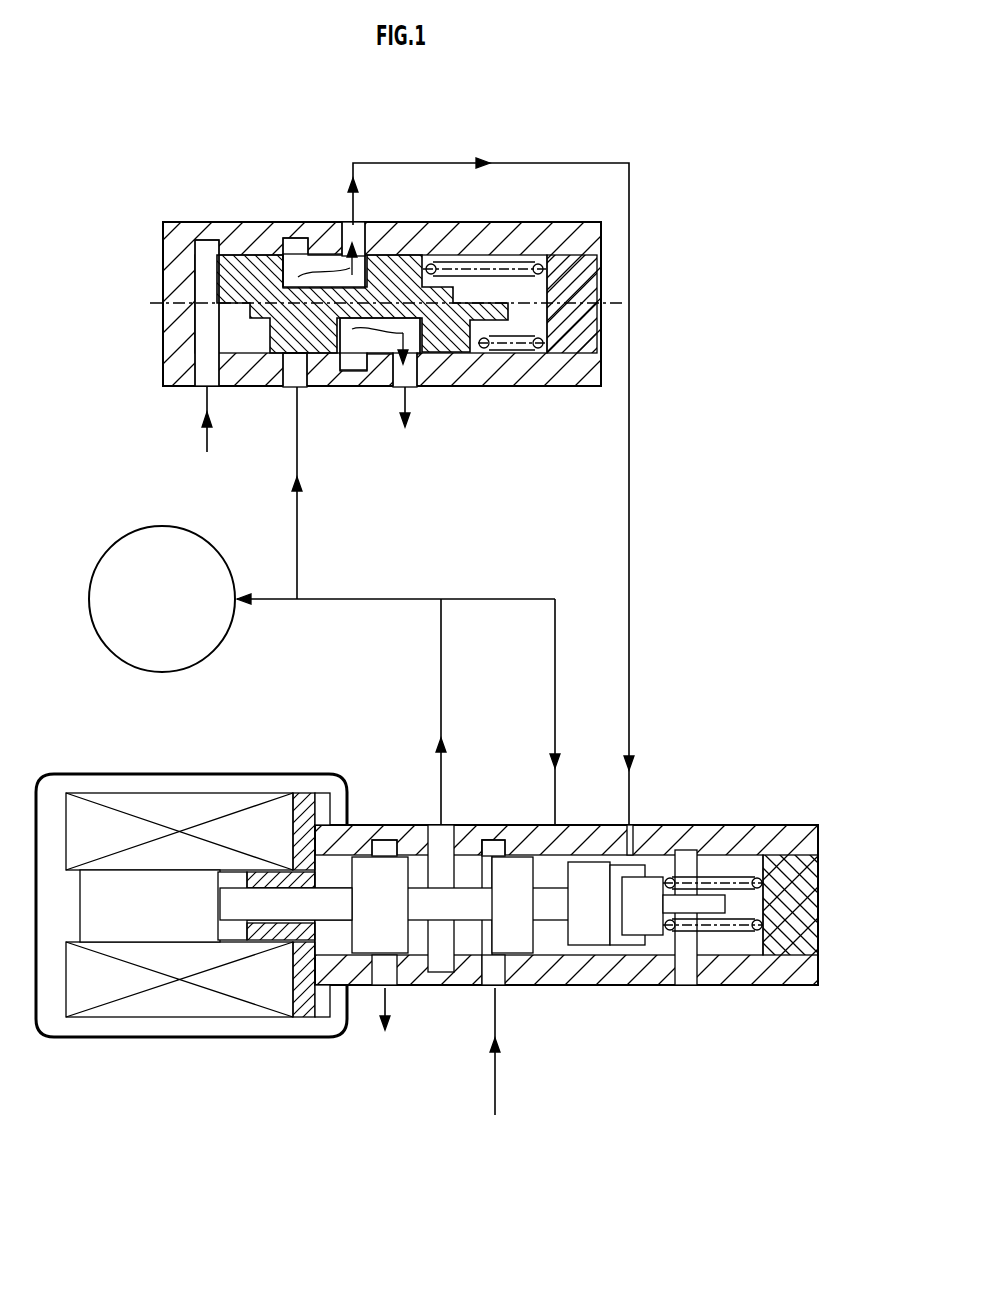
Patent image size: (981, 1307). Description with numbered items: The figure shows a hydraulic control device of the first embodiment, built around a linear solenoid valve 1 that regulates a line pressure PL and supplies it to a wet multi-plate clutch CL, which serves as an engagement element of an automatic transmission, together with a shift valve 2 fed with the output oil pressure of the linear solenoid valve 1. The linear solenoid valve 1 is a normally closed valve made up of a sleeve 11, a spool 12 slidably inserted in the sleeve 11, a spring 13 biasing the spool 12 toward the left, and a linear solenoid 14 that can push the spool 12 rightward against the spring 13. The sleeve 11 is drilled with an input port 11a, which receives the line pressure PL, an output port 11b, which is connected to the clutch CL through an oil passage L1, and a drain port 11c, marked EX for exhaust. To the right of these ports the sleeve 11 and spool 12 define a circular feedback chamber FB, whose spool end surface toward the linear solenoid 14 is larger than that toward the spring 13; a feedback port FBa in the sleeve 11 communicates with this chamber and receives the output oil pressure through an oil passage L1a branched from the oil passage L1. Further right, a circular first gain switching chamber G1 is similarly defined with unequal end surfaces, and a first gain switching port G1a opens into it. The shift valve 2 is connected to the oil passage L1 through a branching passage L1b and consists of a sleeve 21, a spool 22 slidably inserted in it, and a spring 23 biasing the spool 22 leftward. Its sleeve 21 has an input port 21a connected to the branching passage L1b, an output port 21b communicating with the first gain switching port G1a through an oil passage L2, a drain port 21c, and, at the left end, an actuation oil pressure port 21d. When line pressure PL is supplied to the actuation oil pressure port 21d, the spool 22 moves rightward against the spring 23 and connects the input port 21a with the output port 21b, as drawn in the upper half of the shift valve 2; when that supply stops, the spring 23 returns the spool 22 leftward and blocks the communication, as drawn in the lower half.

The linear solenoid valve 1 is at (128, 757).
The sleeve 11 is at (752, 824).
The input port 11a is at (499, 986).
The output port 11b is at (436, 832).
The drain port 11c is at (392, 985).
The spool 12 is at (380, 877).
The spring 13 is at (727, 925).
The linear solenoid 14 is at (256, 772).
The feedback chamber FB is at (560, 986).
The feedback port FBa is at (550, 848).
The first gain switching chamber G1 is at (627, 942).
The first gain switching port G1a is at (633, 845).
The shift valve 2 is at (229, 183).
The sleeve 21 is at (536, 223).
The input port 21a is at (302, 388).
The output port 21b is at (357, 231).
The drain port 21c is at (411, 388).
The actuation oil pressure port 21d is at (203, 388).
The spool 22 is at (265, 262).
The spring 23 is at (460, 268).
The wet multi-plate clutch CL is at (176, 614).
The oil passage L1 is at (441, 686).
The oil passage L1a is at (554, 686).
The branching passage L1b is at (298, 545).
The oil passage L2 is at (630, 372).
The line pressure PL is at (352, 775).
The drain EX is at (396, 727).